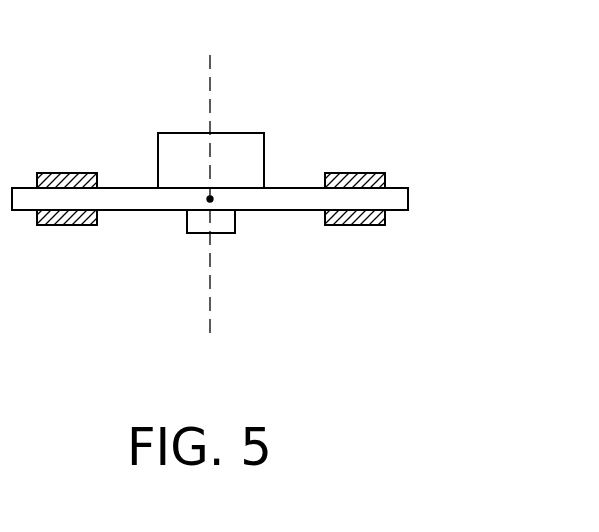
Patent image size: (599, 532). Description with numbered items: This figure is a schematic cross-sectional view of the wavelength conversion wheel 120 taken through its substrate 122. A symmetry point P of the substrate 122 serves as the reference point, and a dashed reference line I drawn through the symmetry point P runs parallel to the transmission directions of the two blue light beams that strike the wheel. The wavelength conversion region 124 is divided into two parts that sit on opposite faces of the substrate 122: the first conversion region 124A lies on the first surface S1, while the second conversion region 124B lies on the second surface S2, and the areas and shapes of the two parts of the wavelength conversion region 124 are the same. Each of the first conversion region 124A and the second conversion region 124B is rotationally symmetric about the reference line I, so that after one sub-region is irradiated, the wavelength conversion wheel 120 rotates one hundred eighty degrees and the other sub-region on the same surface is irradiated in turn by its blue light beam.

The wavelength conversion wheel 120 is at (267, 179).
The substrate 122 is at (408, 200).
The wavelength conversion region 124 is at (279, 147).
The first conversion region 124A is at (70, 186).
The second conversion region 124B is at (63, 225).
The symmetry point P is at (210, 199).
The first surface S1 is at (128, 187).
The second surface S2 is at (128, 211).